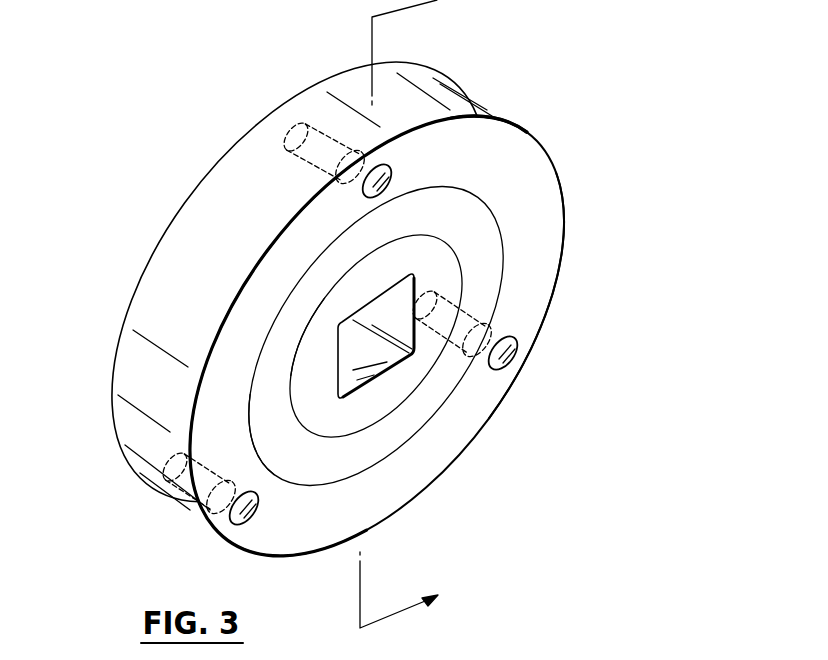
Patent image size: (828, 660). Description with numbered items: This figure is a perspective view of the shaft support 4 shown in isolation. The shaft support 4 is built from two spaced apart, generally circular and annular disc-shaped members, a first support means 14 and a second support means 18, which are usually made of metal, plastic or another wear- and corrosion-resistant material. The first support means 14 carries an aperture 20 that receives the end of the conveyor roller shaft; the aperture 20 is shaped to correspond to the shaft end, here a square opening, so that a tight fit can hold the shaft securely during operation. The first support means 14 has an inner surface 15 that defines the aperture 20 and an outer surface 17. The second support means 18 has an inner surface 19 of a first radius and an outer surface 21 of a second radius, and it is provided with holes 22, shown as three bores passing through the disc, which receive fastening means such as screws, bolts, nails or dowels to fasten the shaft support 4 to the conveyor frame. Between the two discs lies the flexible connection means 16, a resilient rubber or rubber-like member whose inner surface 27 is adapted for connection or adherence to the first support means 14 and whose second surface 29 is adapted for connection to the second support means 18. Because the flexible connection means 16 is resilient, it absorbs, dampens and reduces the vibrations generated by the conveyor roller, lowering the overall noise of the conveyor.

The first support means 14 is at (443, 273).
The inner surface 15 is at (388, 368).
The flexible connection means 16 is at (485, 281).
The outer surface 17 is at (328, 445).
The second support means 18 is at (488, 153).
The inner surface 19 is at (548, 322).
The aperture 20 is at (417, 342).
The outer surface 21 is at (544, 327).
The holes 22 is at (362, 168).
The inner surface 27 is at (314, 315).
The second surface 29 is at (250, 425).
The shaft support 4 is at (412, 314).